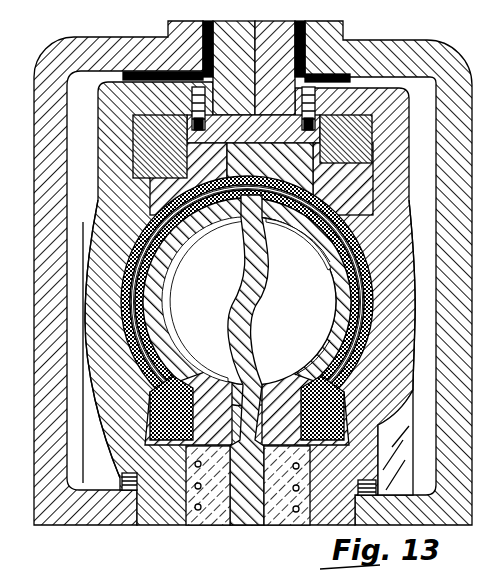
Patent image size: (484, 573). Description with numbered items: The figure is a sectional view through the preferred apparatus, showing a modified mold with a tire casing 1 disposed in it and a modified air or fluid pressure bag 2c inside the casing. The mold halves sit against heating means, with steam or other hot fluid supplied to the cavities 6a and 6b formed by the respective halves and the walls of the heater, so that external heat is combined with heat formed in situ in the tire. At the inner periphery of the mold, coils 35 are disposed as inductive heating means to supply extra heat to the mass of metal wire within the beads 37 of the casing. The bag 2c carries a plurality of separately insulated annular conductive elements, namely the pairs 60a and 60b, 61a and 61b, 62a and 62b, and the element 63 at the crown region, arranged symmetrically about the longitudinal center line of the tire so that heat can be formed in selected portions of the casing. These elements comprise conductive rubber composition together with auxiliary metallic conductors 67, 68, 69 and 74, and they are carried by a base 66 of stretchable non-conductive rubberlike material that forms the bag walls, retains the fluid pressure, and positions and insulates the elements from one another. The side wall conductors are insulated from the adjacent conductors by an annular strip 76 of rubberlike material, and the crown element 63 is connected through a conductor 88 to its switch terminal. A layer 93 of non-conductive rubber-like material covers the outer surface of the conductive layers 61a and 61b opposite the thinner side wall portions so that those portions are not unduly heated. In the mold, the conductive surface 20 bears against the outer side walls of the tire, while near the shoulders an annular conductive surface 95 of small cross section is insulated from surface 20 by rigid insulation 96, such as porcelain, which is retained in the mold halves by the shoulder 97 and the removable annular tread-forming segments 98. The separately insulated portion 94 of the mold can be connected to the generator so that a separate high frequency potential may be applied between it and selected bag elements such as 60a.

The tire casing 1 is at (127, 390).
The air or fluid pressure bag 2c is at (183, 284).
The cavity 6a is at (429, 93).
The cavity 6b is at (90, 84).
The conductive surface 20 is at (250, 303).
The coils 35 is at (203, 515).
The beads 37 is at (206, 446).
The annular conductive element 60a is at (296, 226).
The annular conductive element 60b is at (193, 265).
The annular conductive element 61a is at (337, 291).
The annular conductive element 61b is at (170, 299).
The annular conductive element 62a is at (293, 378).
The annular conductive element 62b is at (182, 350).
The annular conductive element 63 is at (200, 243).
The base 66 is at (290, 257).
The auxiliary metallic conductor 67 is at (261, 179).
The auxiliary metallic conductor 68 is at (156, 328).
The auxiliary metallic conductor 69 is at (303, 405).
The auxiliary metallic conductor 74 is at (270, 173).
The annular strip 76 is at (318, 360).
The conductor 88 is at (264, 302).
The layer of non-conductive rubber-like material 93 is at (127, 257).
The separately insulated portion of the mold 94 is at (240, 149).
The annular conductive surface 95 is at (346, 139).
The insulation 96 is at (133, 131).
The shoulder 97 is at (207, 95).
The removable annular tread-forming segments 98 is at (213, 134).